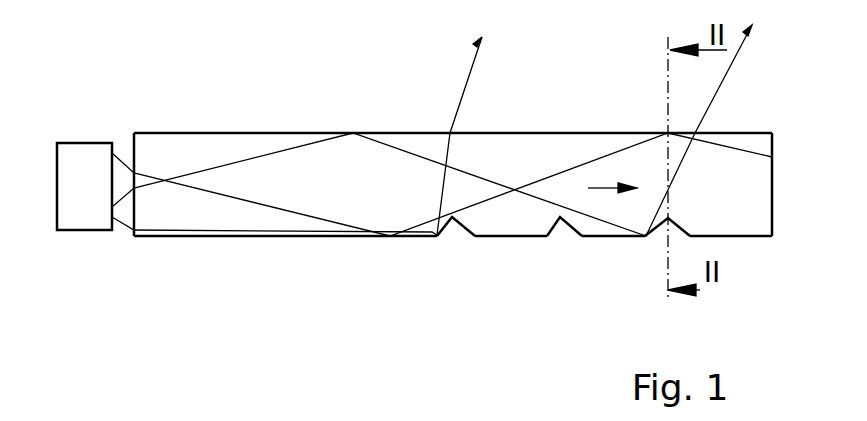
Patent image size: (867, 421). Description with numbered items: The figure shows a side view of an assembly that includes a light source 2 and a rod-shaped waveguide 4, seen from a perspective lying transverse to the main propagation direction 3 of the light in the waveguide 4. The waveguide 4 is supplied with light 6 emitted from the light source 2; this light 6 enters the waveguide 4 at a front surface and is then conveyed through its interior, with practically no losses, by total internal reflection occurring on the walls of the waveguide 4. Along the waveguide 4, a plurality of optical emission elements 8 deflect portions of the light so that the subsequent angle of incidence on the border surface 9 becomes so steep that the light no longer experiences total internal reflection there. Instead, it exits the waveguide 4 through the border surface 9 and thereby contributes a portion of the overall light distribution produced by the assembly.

The light source 2 is at (77, 215).
The main propagation direction 3 is at (602, 188).
The waveguide 4 is at (442, 171).
The light 6 is at (123, 160).
The optical emission elements 8 is at (448, 233).
The border surface 9 is at (514, 132).